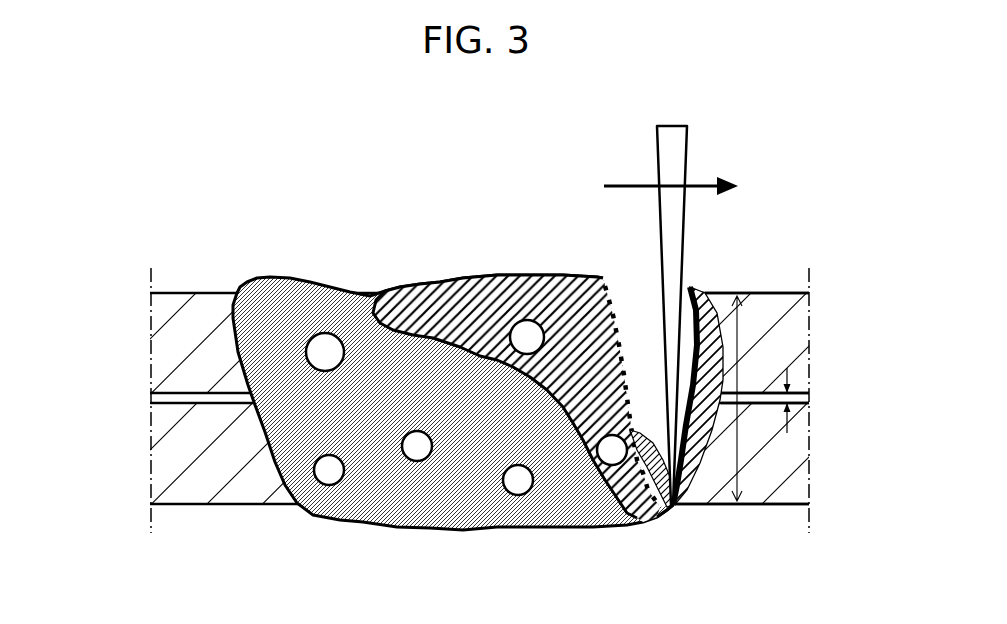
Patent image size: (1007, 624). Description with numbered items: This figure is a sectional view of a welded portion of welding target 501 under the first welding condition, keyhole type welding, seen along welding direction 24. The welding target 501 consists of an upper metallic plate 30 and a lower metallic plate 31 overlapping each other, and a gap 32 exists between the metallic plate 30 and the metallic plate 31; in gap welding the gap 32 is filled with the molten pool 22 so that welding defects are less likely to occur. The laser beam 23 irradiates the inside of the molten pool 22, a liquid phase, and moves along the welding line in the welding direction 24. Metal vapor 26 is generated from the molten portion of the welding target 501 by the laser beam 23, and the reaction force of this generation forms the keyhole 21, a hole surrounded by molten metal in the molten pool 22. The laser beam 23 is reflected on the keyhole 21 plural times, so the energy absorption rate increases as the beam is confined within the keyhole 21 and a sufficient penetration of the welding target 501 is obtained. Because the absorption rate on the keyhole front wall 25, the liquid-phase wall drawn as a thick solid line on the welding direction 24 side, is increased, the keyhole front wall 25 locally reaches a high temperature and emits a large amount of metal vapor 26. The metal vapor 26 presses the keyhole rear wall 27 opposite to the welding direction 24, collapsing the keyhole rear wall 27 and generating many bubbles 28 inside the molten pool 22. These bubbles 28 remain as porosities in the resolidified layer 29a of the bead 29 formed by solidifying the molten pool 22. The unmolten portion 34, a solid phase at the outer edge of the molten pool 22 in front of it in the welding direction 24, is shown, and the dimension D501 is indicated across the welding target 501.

The keyhole 21 is at (637, 312).
The molten pool 22 is at (475, 308).
The laser beam 23 is at (683, 140).
The welding direction 24 is at (623, 183).
The keyhole front wall 25 is at (689, 290).
The metal vapor 26 is at (668, 512).
The keyhole rear wall 27 is at (632, 527).
The bubbles 28 is at (612, 452).
The bead 29 is at (453, 441).
The resolidified layer 29a is at (392, 497).
The metallic plate 30 is at (175, 358).
The metallic plate 31 is at (175, 450).
The gap 32 is at (788, 400).
The unmolten portion 34 is at (788, 336).
The welding target 501 is at (92, 327).
The workpiece thickness D501 is at (740, 460).